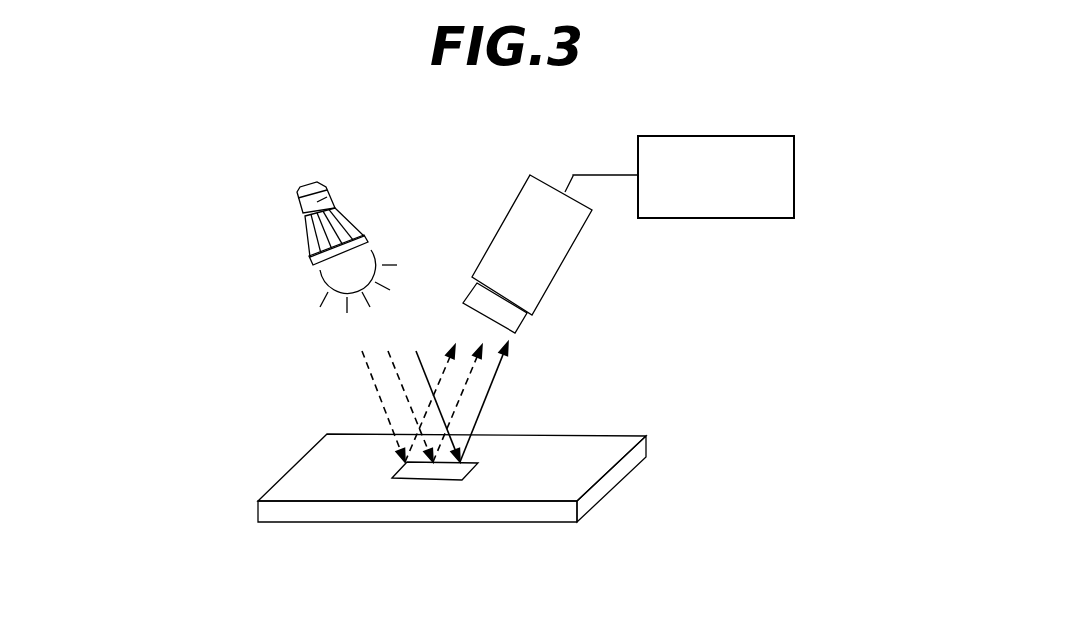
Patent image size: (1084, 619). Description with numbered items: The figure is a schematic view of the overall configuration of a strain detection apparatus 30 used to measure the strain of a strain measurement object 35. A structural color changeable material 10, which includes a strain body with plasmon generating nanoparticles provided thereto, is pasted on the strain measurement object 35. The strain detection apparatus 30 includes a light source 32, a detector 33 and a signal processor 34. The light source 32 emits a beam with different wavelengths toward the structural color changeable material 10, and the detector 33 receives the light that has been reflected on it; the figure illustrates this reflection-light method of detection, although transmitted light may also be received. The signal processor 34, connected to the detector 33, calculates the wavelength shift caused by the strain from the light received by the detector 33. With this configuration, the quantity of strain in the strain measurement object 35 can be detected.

The structural color changeable material 10 is at (422, 480).
The strain detection apparatus 30 is at (409, 142).
The light source 32 is at (315, 247).
The detector 33 is at (557, 262).
The signal processor 34 is at (785, 187).
The strain measurement object 35 is at (615, 473).